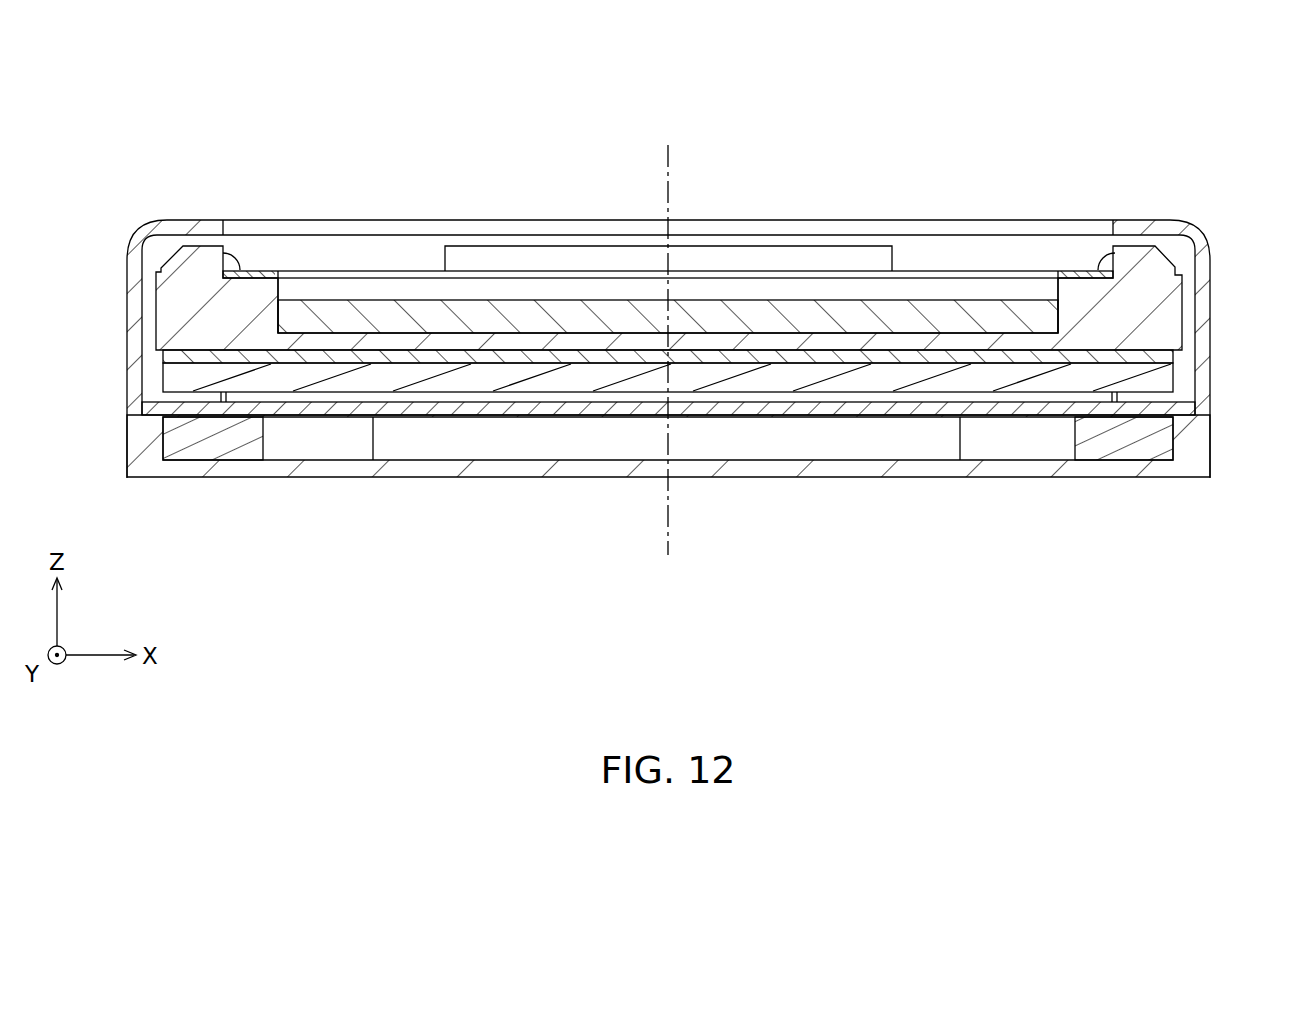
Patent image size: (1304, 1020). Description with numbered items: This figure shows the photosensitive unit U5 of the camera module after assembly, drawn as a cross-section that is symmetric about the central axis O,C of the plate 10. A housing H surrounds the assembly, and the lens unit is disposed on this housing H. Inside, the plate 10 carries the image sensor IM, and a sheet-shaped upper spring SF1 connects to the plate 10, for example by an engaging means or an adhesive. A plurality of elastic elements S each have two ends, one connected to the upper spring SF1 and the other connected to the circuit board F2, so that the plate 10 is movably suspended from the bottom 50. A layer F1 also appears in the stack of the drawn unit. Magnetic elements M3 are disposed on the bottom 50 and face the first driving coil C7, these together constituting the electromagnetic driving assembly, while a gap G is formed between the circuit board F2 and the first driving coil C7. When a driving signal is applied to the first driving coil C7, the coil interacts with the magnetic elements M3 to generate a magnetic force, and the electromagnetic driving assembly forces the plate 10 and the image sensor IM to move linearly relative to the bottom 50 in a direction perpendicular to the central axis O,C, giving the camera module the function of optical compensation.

The photosensitive unit U5 is at (86, 140).
The central axis O,C is at (667, 333).
The housing H is at (1141, 224).
The plate 10 is at (1150, 313).
The upper spring SF1 is at (258, 271).
The image sensor IM is at (974, 318).
The first fixing layer F1 is at (1160, 358).
The first driving coil C7 is at (187, 374).
The gap G is at (900, 396).
The elastic element S is at (222, 403).
The circuit board F2 is at (765, 411).
The bottom 50 is at (1195, 461).
The magnetic element M3 is at (213, 448).